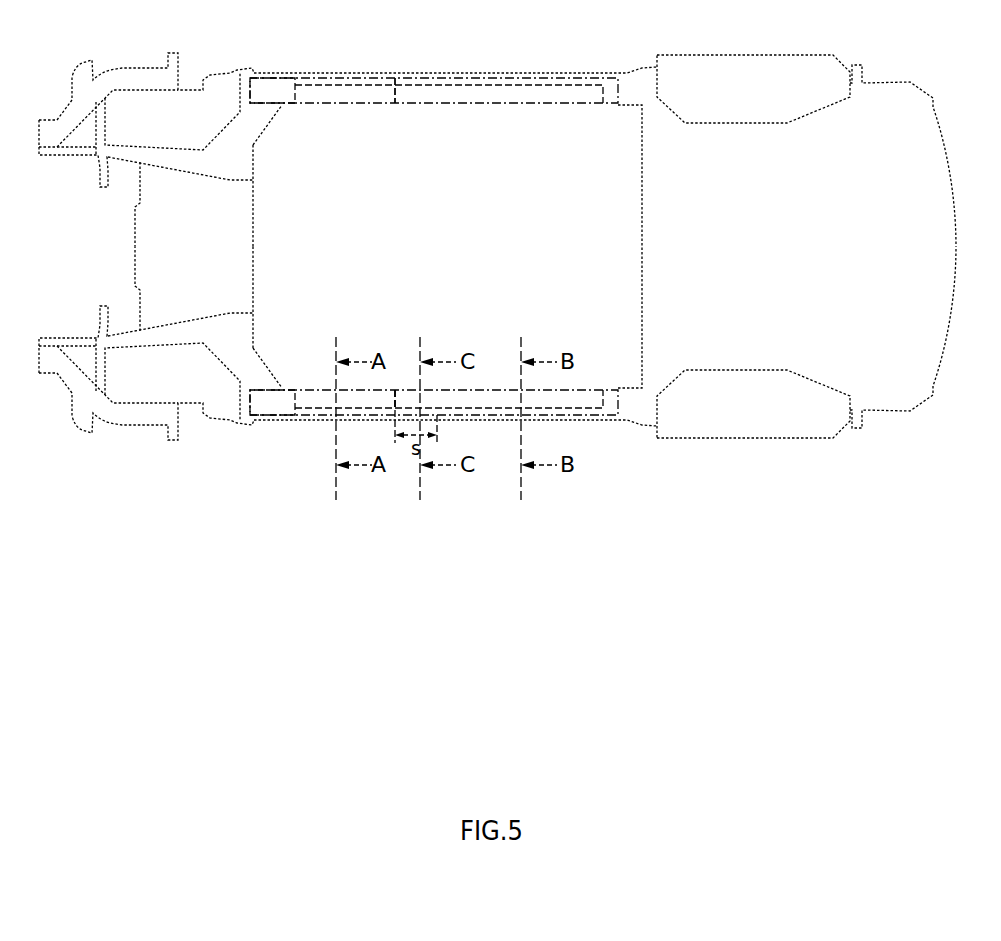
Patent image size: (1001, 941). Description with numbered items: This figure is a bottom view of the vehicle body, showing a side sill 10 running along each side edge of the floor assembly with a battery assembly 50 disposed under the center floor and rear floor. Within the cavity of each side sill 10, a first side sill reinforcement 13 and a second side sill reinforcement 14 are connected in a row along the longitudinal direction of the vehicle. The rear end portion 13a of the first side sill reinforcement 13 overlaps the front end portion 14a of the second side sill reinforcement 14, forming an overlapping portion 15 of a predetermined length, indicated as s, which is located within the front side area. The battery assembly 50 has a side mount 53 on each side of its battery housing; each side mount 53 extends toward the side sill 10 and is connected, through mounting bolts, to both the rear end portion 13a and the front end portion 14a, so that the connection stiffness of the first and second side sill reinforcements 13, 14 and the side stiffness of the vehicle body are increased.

The side sill 10 is at (461, 70).
The first side sill reinforcement 13 is at (307, 415).
The rear end portion of the first side sill reinforcement 13a is at (410, 400).
The second side sill reinforcement 14 is at (515, 78).
The front end portion of the second side sill reinforcement 14a is at (427, 243).
The overlapping portion 15 is at (405, 388).
The battery assembly 50 is at (253, 270).
The side mount 53 is at (307, 85).